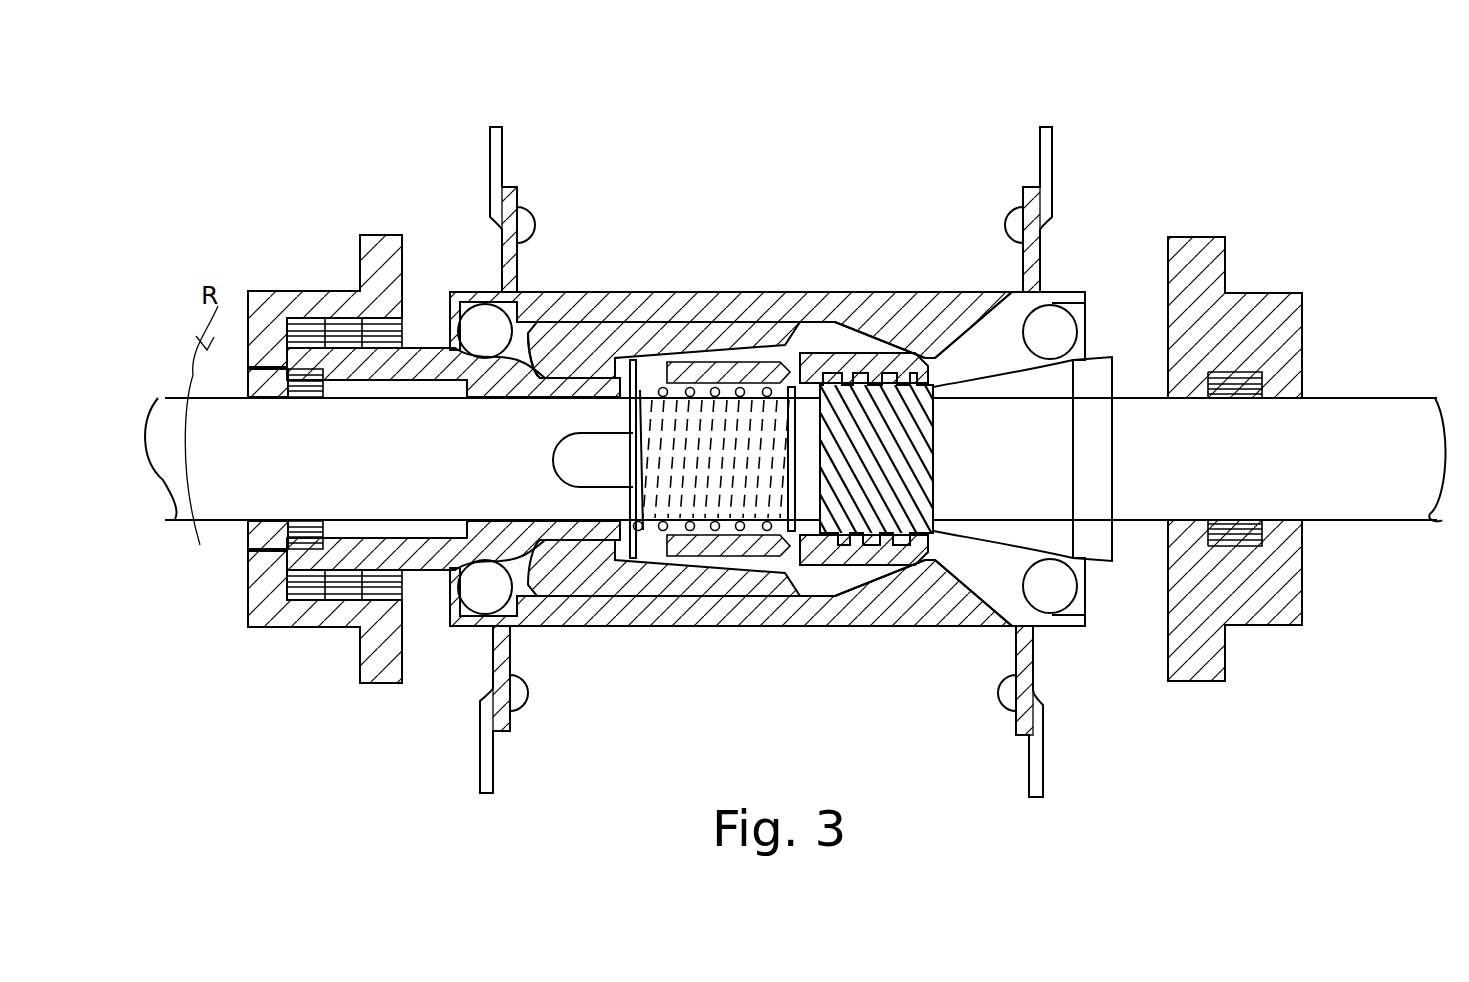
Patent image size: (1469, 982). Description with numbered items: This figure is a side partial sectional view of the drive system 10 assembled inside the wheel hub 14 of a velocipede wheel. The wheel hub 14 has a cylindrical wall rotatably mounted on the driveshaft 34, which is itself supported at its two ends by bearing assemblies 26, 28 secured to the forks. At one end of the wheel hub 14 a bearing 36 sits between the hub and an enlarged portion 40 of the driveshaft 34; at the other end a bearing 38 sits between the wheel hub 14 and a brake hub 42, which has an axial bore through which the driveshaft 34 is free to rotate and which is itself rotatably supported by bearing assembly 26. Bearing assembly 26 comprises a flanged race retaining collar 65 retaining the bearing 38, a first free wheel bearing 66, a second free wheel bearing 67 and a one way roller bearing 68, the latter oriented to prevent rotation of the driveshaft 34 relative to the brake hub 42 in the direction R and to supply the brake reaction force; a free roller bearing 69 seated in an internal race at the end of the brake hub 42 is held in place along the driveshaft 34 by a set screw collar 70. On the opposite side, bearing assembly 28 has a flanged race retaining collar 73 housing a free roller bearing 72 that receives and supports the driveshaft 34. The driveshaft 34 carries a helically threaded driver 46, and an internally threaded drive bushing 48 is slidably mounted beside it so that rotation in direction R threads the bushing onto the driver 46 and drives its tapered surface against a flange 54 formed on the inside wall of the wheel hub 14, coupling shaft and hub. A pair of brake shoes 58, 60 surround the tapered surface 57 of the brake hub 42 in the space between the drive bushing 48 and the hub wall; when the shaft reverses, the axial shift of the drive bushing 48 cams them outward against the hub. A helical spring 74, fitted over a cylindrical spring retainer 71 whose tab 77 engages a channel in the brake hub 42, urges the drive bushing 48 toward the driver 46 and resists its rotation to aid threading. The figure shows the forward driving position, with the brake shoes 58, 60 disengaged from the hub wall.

The drive system 10 is at (748, 167).
The wheel hub 14 is at (730, 300).
The bearing assembly 26 is at (282, 460).
The bearing assembly 28 is at (1243, 431).
The driveshaft 34 is at (1347, 507).
The bearing 36 is at (1063, 595).
The bearing 38 is at (472, 600).
The enlarged portion 40 is at (1108, 352).
The brake hub 42 is at (404, 355).
The driver 46 is at (913, 457).
The drive bushing 48 is at (817, 352).
The flange 54 is at (870, 330).
The tapered surface 57 is at (530, 355).
The brake shoe 58 is at (670, 335).
The brake shoe 60 is at (598, 582).
The flanged race retaining collar 65 is at (375, 243).
The first free wheel bearing 66 is at (265, 612).
The second free wheel bearing 67 is at (373, 630).
The one way roller bearing 68 is at (317, 605).
The free roller bearing 69 is at (288, 560).
The set screw collar 70 is at (245, 543).
The cylindrical spring retainer 71 is at (837, 507).
The free roller bearing 72 is at (1240, 553).
The flanged race retaining collar 73 is at (1205, 252).
The helical spring 74 is at (805, 552).
The tab 77 is at (578, 468).